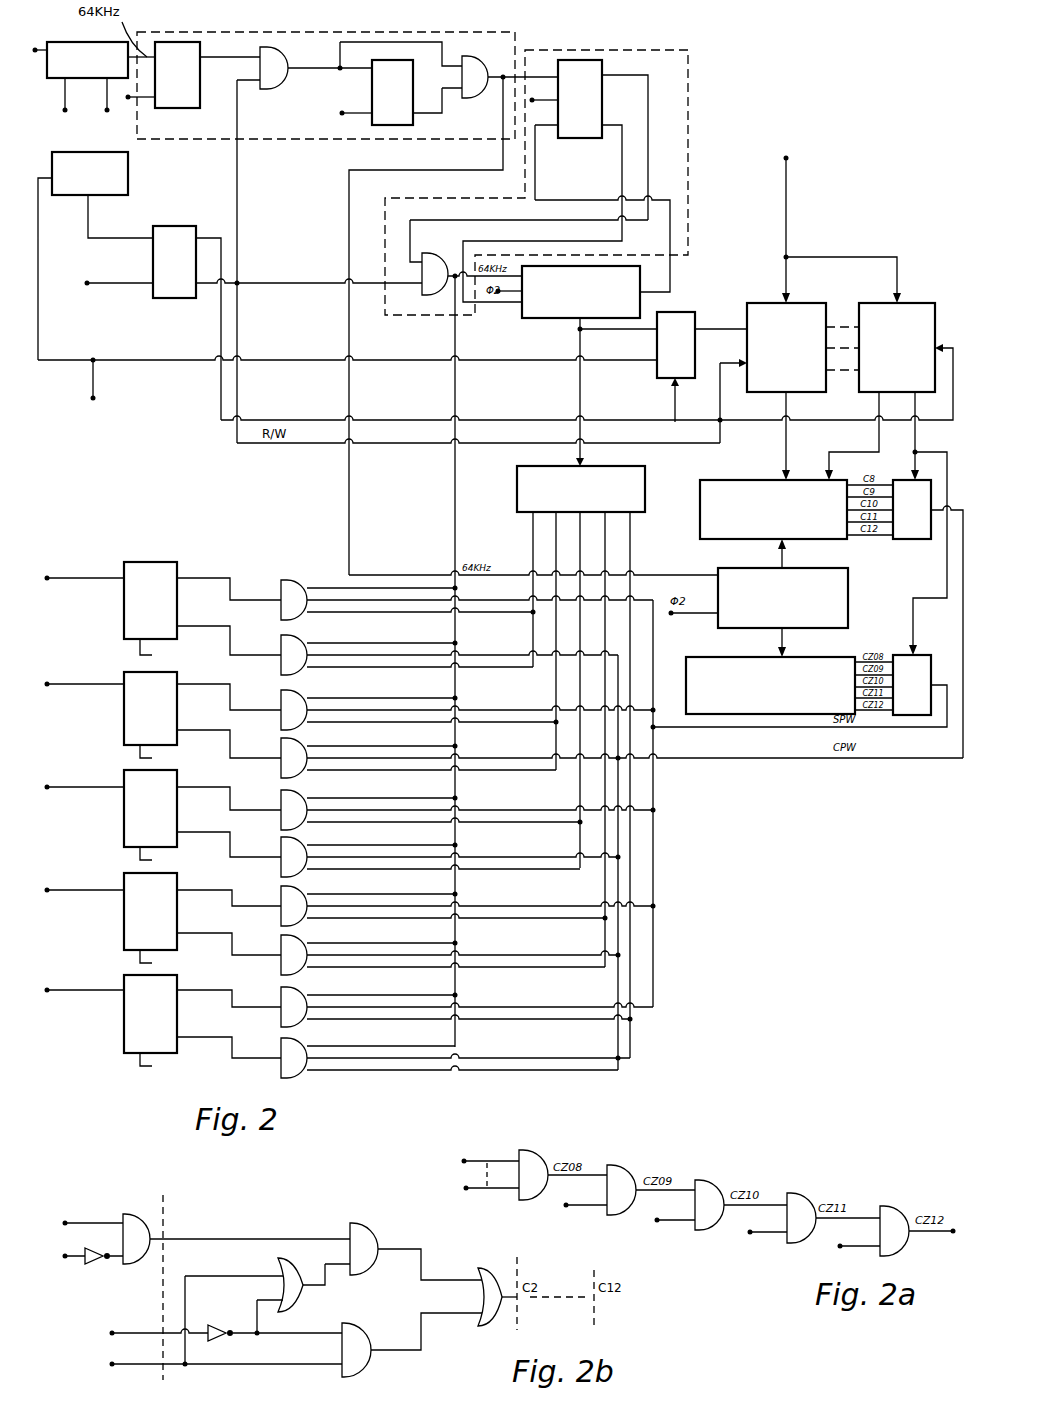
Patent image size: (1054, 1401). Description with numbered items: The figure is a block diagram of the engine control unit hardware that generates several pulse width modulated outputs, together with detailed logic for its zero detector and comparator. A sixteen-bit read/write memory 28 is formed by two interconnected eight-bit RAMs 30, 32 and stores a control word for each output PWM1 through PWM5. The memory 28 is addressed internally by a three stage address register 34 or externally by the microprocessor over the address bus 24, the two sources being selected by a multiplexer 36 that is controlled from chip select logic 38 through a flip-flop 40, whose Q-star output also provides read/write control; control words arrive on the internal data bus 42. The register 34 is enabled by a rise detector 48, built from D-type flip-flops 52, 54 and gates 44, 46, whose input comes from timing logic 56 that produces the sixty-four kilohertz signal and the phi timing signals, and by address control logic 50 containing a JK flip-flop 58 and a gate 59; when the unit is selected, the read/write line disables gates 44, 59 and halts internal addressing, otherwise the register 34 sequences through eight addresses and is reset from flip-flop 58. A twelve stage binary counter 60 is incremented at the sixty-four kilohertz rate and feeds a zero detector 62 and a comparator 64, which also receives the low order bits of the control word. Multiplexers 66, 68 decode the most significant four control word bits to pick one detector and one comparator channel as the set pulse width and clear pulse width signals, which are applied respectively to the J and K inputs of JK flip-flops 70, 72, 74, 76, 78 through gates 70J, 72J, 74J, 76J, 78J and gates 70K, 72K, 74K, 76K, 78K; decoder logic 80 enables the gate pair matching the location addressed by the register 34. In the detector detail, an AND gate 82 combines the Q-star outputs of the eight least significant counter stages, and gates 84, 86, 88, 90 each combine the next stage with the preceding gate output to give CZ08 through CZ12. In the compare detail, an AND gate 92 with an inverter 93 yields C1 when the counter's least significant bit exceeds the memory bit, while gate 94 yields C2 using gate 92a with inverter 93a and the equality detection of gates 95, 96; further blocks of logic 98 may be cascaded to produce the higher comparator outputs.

In FIG. 2, the address bus 24 is at (98, 375).
In FIG. 2, the read/write memory 28 is at (846, 302).
In FIG. 2, the RAM 30 is at (757, 305).
In FIG. 2, the RAM 32 is at (915, 305).
In FIG. 2, the address register 34 is at (565, 318).
In FIG. 2, the multiplexer 36 is at (657, 372).
In FIG. 2, the chip select logic 38 is at (128, 160).
In FIG. 2, the flip-flop 40 is at (172, 298).
In FIG. 2, the internal ECU data bus 42 is at (790, 198).
In FIG. 2, the gate 44 is at (275, 85).
In FIG. 2, the gate 46 is at (450, 96).
In FIG. 2, the rise detector 48 is at (270, 139).
In FIG. 2, the address control logic 50 is at (688, 140).
In FIG. 2, the D-type flip-flop 52 is at (178, 108).
In FIG. 2, the D-type flip-flop 54 is at (352, 72).
In FIG. 2, the timing logic 56 is at (80, 80).
In FIG. 2, the JK flip-flop 58 is at (580, 138).
In FIG. 2, the gate 59 is at (432, 292).
In FIG. 2, the binary counter 60 is at (848, 582).
In FIG. 2, the zero detector 62 is at (710, 657).
In FIG. 2, the comparator 64 is at (734, 482).
In FIG. 2, the multiplexer 66 is at (920, 657).
In FIG. 2, the multiplexer 68 is at (912, 540).
In FIG. 2, the JK flip-flop 70 is at (170, 563).
In FIG. 2, the gate 70J is at (296, 582).
In FIG. 2, the gate 70K is at (300, 648).
In FIG. 2, the JK flip-flop 72 is at (178, 673).
In FIG. 2, the gate 72J is at (300, 700).
In FIG. 2, the gate 72K is at (300, 752).
In FIG. 2, the JK flip-flop 74 is at (180, 772).
In FIG. 2, the gate 74J is at (300, 802).
In FIG. 2, the gate 74K is at (300, 851).
In FIG. 2, the JK flip-flop 76 is at (180, 875).
In FIG. 2, the gate 76J is at (300, 898).
In FIG. 2, the gate 76K is at (300, 949).
In FIG. 2, the JK flip-flop 78 is at (180, 977).
In FIG. 2, the gate 78J is at (300, 999).
In FIG. 2, the gate 78K is at (300, 1052).
In FIG. 2, the decoder logic 80 is at (517, 493).
In FIG. 2A, the AND gate 82 is at (535, 1152).
In FIG. 2A, the gate 84 is at (630, 1170).
In FIG. 2A, the gate 86 is at (718, 1188).
In FIG. 2A, the gate 88 is at (810, 1198).
In FIG. 2A, the gate 90 is at (900, 1212).
In FIG. 2B, the AND gate 92 is at (137, 1212).
In FIG. 2B, the gate 92a is at (370, 1358).
In FIG. 2B, the inverter 93 is at (95, 1264).
In FIG. 2B, the inverter 93a is at (222, 1341).
In FIG. 2B, the gate 94 is at (484, 1322).
In FIG. 2B, the gate 95 is at (302, 1296).
In FIG. 2B, the gate 96 is at (372, 1262).
In FIG. 2B, the logic 98 is at (254, 1229).